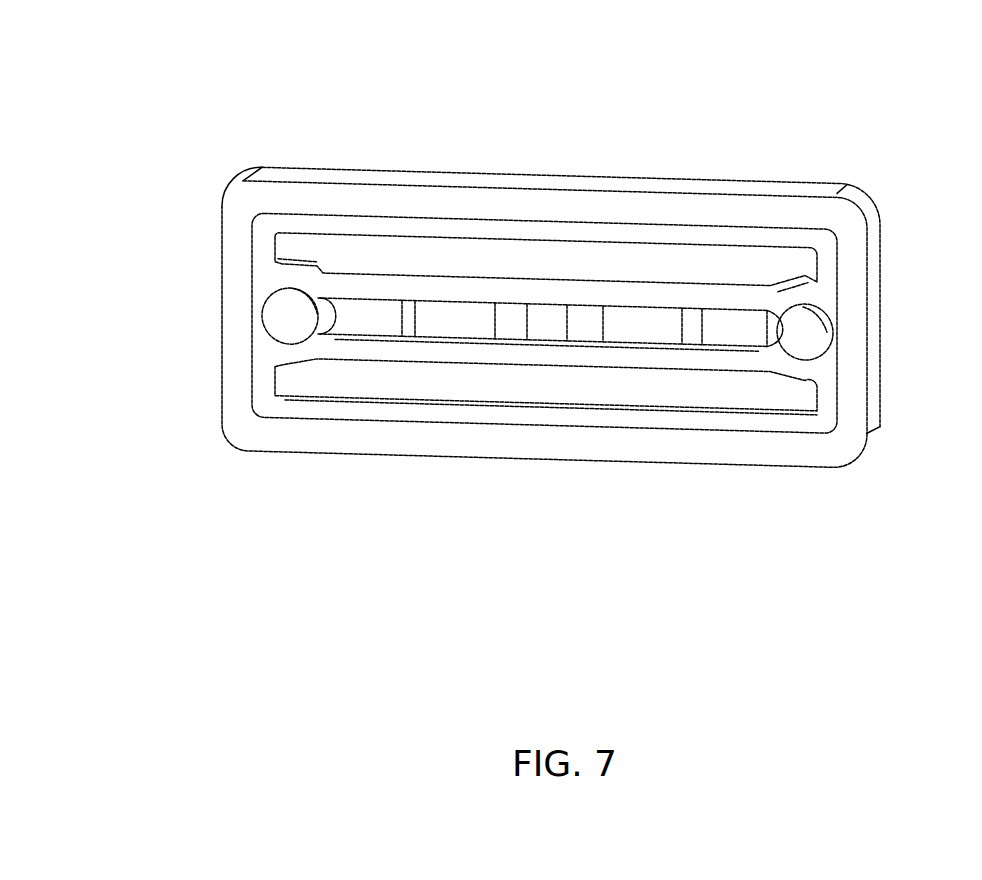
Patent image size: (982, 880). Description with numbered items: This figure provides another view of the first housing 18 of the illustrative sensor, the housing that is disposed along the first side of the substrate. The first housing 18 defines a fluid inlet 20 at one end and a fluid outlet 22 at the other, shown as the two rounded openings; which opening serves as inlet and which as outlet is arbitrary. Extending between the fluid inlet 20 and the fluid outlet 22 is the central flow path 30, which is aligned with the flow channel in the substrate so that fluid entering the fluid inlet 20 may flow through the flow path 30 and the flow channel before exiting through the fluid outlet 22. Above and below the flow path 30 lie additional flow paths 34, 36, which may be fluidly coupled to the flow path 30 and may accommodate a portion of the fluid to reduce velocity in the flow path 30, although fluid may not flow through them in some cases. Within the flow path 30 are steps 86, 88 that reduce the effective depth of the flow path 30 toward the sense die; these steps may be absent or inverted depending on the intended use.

The first housing 18 is at (777, 110).
The fluid inlet 20 is at (283, 317).
The fluid outlet 22 is at (808, 338).
The flow path 30 is at (740, 323).
The additional flow path 34 is at (370, 247).
The additional flow path 36 is at (412, 383).
The step 86 is at (457, 323).
The step 88 is at (545, 328).